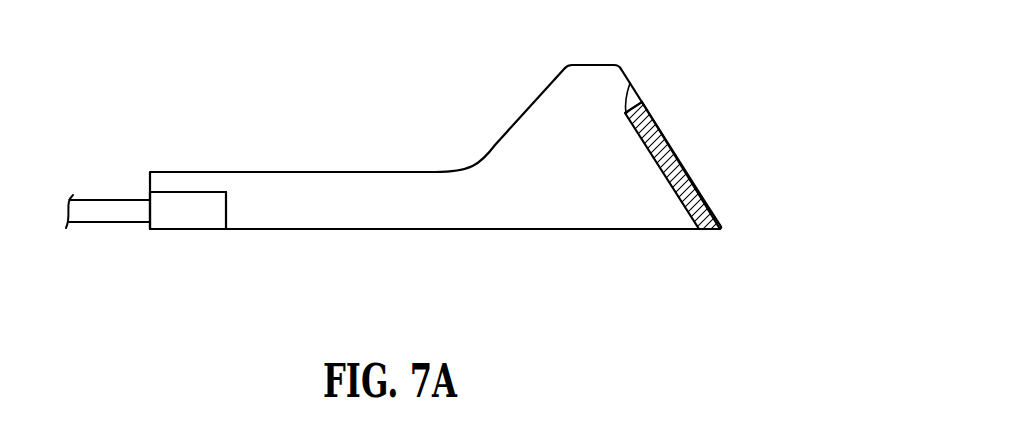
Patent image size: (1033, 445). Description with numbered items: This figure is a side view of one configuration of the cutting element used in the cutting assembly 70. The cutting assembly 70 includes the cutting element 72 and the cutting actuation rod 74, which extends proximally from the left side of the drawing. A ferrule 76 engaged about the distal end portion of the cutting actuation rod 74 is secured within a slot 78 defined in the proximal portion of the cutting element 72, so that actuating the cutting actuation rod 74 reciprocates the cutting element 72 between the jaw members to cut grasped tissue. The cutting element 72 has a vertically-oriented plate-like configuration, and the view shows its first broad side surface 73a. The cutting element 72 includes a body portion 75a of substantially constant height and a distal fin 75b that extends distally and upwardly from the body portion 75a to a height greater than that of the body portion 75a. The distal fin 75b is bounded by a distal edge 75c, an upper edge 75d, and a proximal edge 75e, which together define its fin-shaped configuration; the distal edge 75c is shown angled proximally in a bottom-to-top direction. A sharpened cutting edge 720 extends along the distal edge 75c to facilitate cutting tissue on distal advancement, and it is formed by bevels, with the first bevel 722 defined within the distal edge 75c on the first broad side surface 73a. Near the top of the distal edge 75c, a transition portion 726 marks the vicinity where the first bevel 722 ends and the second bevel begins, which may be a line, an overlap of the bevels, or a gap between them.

The cutting assembly 70 is at (242, 75).
The cutting element 72 is at (360, 147).
The cutting actuation rod 74 is at (120, 200).
The ferrule 76 is at (188, 230).
The slot 78 is at (197, 192).
The first broad side surface 73a is at (355, 212).
The body portion 75a is at (440, 207).
The distal fin 75b is at (600, 153).
The distal edge 75c is at (718, 205).
The upper edge 75d is at (595, 60).
The proximal edge 75e is at (517, 123).
The sharpened cutting edge 720 is at (682, 138).
The first bevel 722 is at (687, 167).
The transition portion 726 is at (637, 97).